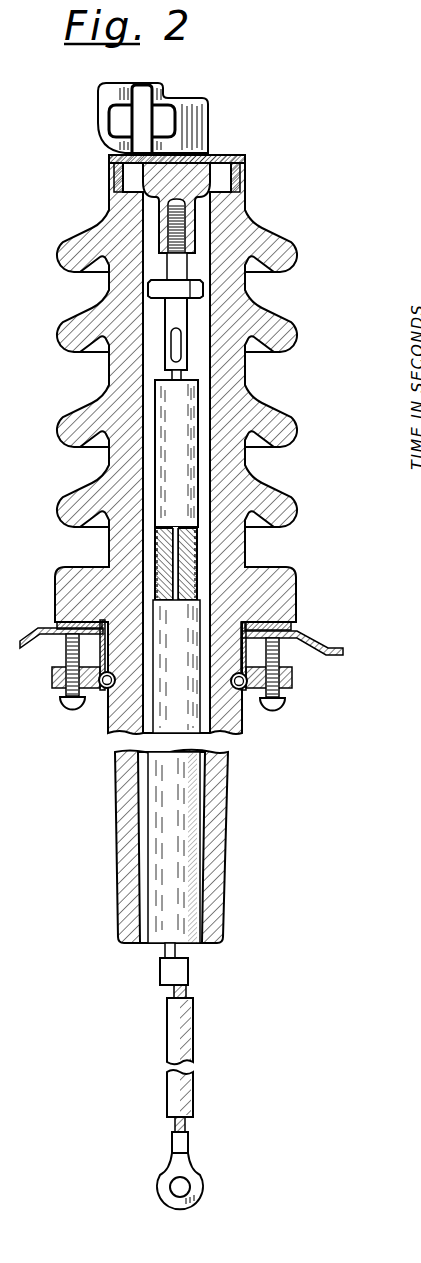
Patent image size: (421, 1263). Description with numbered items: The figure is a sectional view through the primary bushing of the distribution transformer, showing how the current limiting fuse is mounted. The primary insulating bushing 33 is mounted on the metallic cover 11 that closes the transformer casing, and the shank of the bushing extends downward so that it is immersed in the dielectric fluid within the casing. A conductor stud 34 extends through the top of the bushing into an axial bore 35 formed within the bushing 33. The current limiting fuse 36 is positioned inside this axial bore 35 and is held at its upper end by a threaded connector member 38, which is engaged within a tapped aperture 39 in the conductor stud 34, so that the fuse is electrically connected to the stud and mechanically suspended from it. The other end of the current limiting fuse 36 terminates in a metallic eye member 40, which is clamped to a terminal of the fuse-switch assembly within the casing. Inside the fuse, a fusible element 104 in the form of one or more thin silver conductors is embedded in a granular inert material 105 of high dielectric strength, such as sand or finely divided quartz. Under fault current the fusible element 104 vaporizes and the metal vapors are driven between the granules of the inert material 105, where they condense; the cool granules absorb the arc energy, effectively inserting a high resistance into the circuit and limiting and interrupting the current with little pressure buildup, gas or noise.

The metallic cover 11 is at (316, 647).
The primary insulating bushing 33 is at (90, 421).
The conductor stud 34 is at (196, 113).
The axial bore 35 is at (141, 372).
The current limiting fuse 36 is at (187, 462).
The threaded connector member 38 is at (172, 270).
The tapped aperture 39 is at (173, 238).
The metallic eye member 40 is at (168, 1178).
The fusible element 104 is at (173, 553).
The granular inert material 105 is at (183, 555).